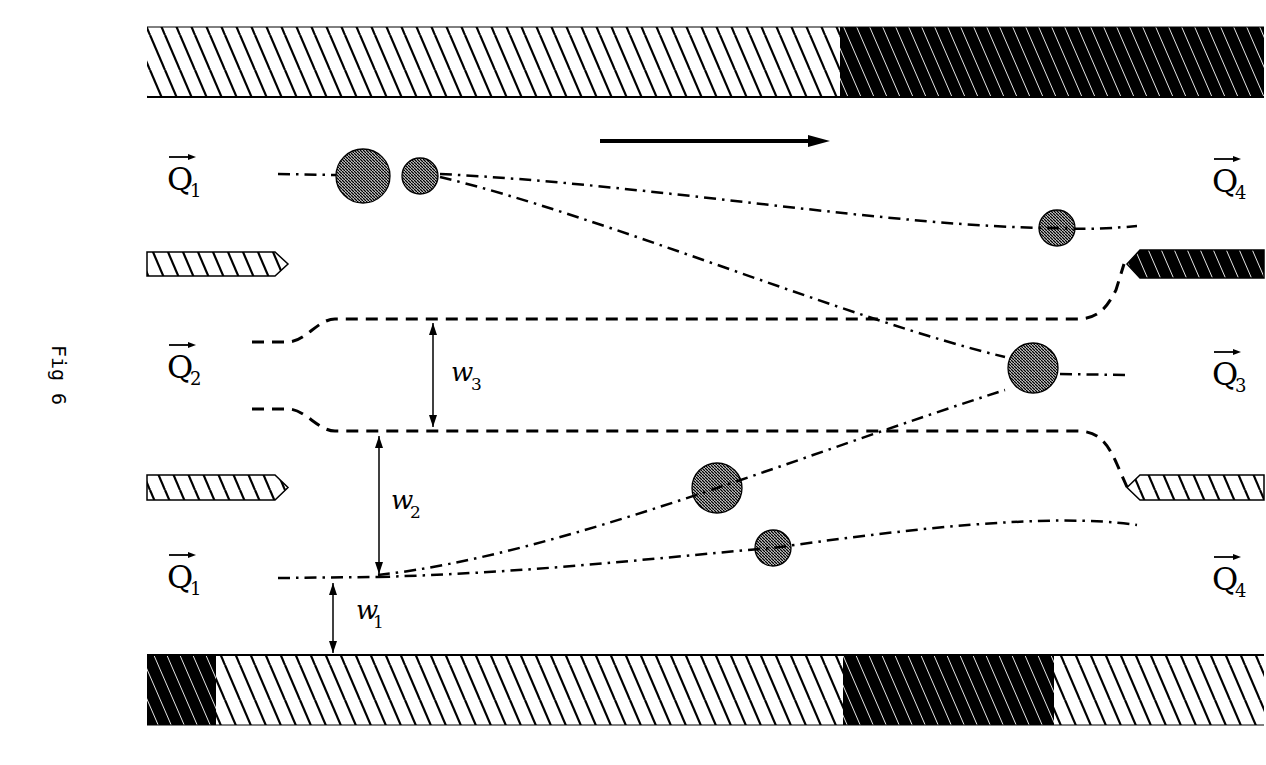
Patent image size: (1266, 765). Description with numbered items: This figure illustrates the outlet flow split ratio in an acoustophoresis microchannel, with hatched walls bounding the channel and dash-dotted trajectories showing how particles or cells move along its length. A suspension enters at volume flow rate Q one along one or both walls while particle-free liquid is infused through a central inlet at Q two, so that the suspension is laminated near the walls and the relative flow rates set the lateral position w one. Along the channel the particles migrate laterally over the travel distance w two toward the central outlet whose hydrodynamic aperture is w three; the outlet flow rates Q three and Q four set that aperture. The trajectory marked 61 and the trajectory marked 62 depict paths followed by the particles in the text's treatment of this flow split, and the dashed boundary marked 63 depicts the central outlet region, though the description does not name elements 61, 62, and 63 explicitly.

The small droplet flow path 61 is at (808, 203).
The large droplet flow path 62 is at (802, 297).
The central sheath flow channel 63 is at (630, 320).